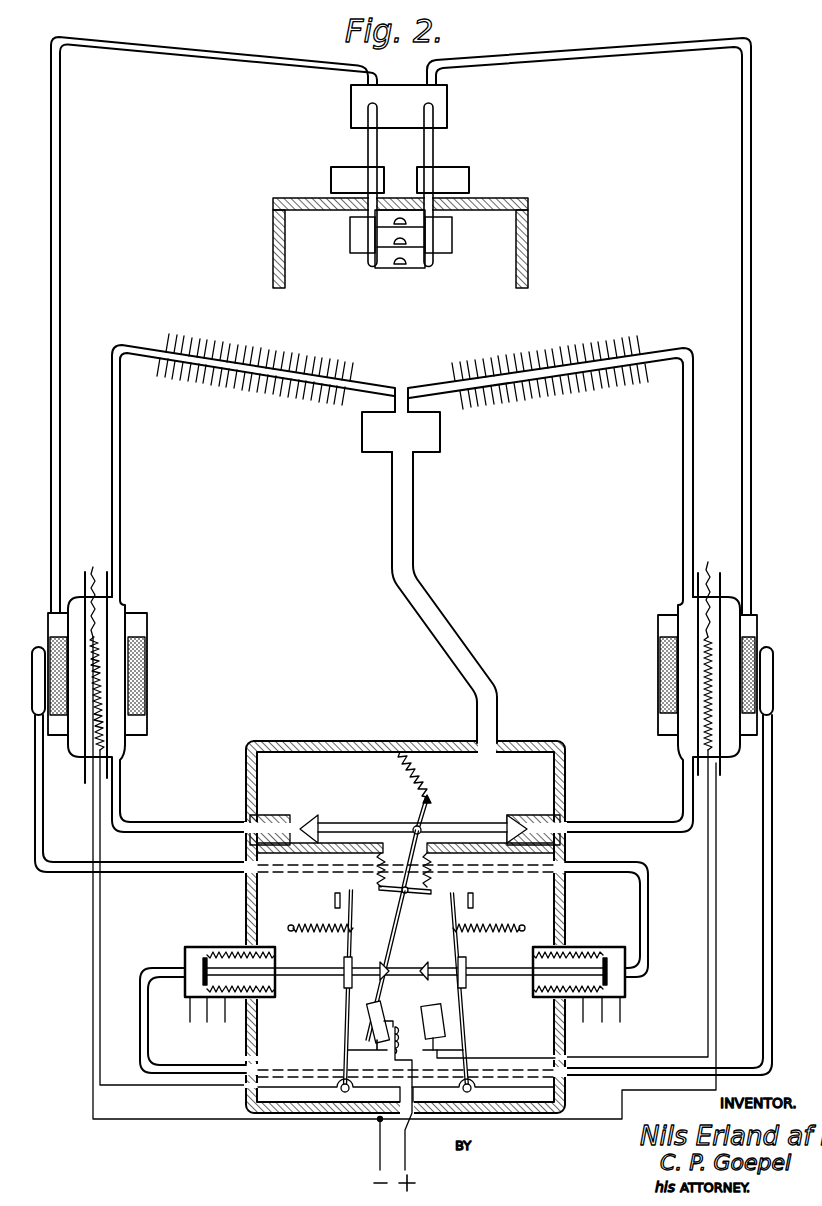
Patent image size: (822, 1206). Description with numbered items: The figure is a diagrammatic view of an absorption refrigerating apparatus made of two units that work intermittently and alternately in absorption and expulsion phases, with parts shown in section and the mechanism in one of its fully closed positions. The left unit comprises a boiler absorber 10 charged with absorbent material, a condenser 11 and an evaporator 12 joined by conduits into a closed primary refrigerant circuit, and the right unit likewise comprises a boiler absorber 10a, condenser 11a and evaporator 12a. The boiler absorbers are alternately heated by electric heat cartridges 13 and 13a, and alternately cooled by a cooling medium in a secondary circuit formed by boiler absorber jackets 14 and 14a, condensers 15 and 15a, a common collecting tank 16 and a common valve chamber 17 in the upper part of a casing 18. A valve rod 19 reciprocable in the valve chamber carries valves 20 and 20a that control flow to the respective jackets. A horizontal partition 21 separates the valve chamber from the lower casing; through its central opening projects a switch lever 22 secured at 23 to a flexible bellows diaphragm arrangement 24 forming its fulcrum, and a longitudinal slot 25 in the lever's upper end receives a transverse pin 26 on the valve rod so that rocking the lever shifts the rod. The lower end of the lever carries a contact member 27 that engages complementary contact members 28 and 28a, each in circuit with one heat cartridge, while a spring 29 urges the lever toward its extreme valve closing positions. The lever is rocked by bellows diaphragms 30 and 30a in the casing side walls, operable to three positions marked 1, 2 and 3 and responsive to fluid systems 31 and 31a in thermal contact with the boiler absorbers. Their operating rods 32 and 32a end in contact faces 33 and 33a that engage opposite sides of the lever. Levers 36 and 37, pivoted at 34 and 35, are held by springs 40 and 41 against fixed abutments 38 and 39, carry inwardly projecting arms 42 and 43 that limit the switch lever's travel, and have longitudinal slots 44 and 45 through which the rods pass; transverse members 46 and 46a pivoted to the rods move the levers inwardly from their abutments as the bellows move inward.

The boiler absorber 10 is at (147, 663).
The boiler absorber 10a is at (660, 665).
The condenser 11 is at (351, 105).
The condenser 11a is at (447, 105).
The evaporator 12 is at (331, 180).
The evaporator 12a is at (469, 180).
The electric heat cartridge 13 is at (89, 659).
The electric heat cartridge 13a is at (718, 654).
The boiler absorber jacket 14 is at (120, 607).
The boiler absorber jacket 14a is at (688, 607).
The condenser 15 is at (250, 352).
The condenser 15a is at (538, 350).
The common collecting tank 16 is at (440, 432).
The common valve chamber 17 is at (337, 766).
The housing or casing 18 is at (246, 905).
The valve rod 19 is at (352, 822).
The valve 20 is at (301, 822).
The valve 20a is at (516, 822).
The horizontal partition 21 is at (527, 854).
The switch lever 22 is at (399, 918).
The fulcrum securing point 23 is at (402, 900).
The flexible bellows diaphragm arrangement 24 is at (433, 885).
The longitudinal slot 25 is at (424, 826).
The transverse pin 26 is at (413, 827).
The contact member 27 is at (385, 1020).
The complementary contact member 28 is at (433, 1005).
The complementary contact member 28a is at (398, 1024).
The spring 29 is at (424, 774).
The bellows diaphragm 30 is at (574, 991).
The bellows diaphragm 30a is at (237, 987).
The fluid system 31 is at (37, 652).
The fluid system 31a is at (768, 652).
The operating rod 32 is at (532, 990).
The operating rod 32a is at (276, 990).
The contact face 33 is at (456, 962).
The contact face 33a is at (353, 960).
The pivot 34 is at (472, 1089).
The pivot 35 is at (340, 1090).
The lever 36 is at (462, 1008).
The lever 37 is at (346, 1025).
The fixed abutment 38 is at (488, 893).
The fixed abutment 39 is at (322, 899).
The spring 40 is at (500, 925).
The spring 41 is at (295, 919).
The arm 42 is at (463, 1050).
The arm 43 is at (348, 1050).
The longitudinal slot 44 is at (428, 966).
The longitudinal slot 45 is at (382, 966).
The transverse member 46 is at (532, 955).
The transverse member 46a is at (276, 956).
The bellows position 1 is at (190, 1021).
The bellows position 2 is at (207, 1021).
The bellows position 3 is at (225, 1021).